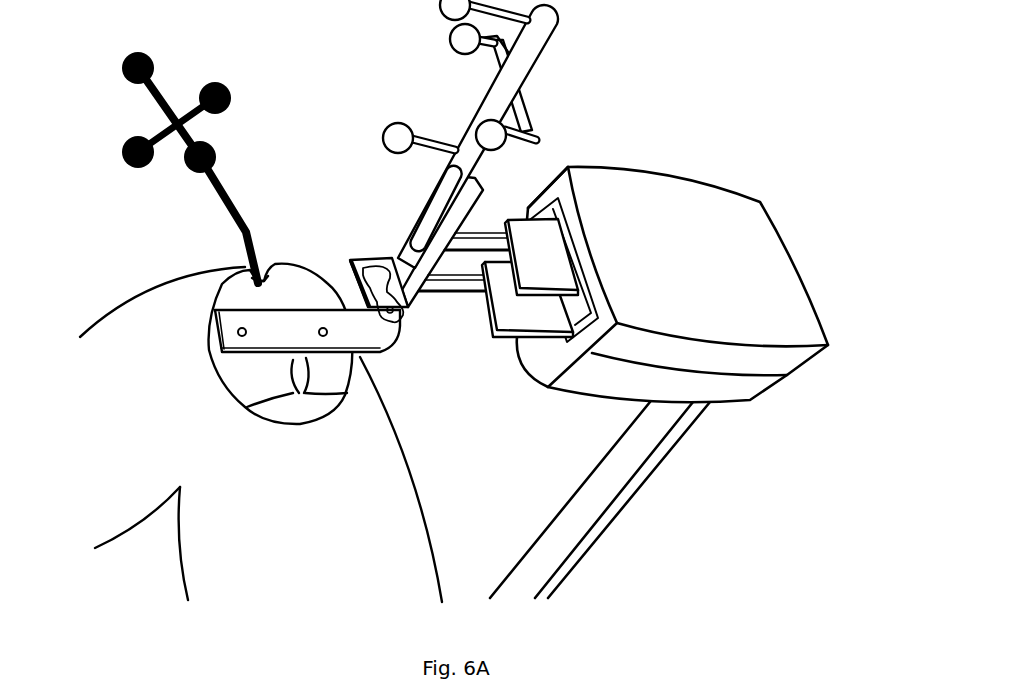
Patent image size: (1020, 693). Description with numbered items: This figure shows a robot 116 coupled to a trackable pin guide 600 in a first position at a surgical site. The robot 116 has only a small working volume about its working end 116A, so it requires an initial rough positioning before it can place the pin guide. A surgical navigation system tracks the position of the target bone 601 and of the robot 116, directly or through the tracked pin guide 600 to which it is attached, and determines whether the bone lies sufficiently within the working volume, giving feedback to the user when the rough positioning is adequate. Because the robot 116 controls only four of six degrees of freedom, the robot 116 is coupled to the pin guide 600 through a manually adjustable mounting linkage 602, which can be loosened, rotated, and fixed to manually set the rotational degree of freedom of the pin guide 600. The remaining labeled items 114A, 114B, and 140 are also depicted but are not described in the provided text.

The first optical tracking marker array 114A is at (123, 145).
The second optical tracking marker array 114B is at (527, 80).
The robot 116 is at (720, 264).
The working end 116A is at (462, 328).
The patient 140 is at (142, 439).
The trackable pin guide 600 is at (279, 345).
The target bone 601 is at (252, 303).
The manually adjustable mounting linkage 602 is at (360, 253).